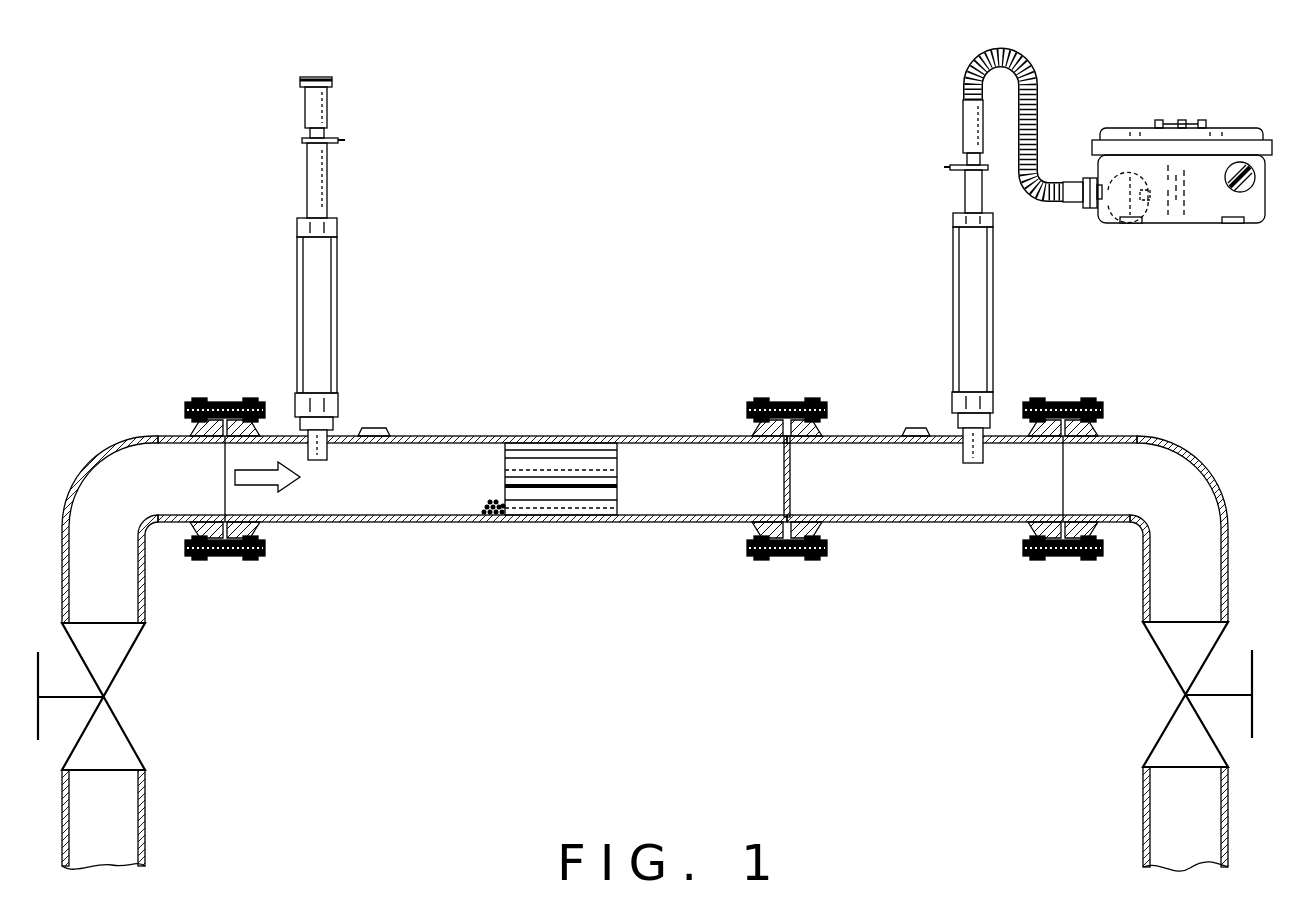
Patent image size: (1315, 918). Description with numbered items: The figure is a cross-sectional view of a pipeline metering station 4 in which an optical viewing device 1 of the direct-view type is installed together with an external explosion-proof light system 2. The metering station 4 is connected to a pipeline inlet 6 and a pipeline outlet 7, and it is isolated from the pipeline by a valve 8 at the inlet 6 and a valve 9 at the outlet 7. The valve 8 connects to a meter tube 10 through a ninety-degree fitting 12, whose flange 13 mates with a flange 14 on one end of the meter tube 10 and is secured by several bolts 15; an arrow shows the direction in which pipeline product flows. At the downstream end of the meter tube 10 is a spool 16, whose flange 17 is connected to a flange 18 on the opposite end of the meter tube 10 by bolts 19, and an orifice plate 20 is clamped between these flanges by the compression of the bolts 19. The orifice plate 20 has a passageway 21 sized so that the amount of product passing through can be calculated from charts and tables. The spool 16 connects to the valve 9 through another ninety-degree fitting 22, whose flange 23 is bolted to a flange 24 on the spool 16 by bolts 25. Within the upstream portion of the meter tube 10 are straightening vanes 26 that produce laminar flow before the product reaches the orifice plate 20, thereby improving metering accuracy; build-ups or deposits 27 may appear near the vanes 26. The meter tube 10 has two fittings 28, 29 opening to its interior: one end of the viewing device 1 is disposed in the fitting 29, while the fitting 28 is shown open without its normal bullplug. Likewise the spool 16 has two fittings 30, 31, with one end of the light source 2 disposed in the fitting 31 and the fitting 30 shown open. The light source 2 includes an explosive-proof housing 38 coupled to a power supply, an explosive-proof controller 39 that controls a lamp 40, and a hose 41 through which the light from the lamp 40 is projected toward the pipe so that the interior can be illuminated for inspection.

The optical viewing device 1 is at (233, 148).
The explosion-proof light system 2 is at (865, 165).
The metering station 4 is at (935, 610).
The pipeline inlet 6 is at (147, 845).
The pipeline outlet 7 is at (1143, 817).
The valve 8 is at (115, 742).
The valve 9 is at (1182, 747).
The meter tube 10 is at (390, 522).
The 90 degree fitting 12 is at (107, 462).
The flange 13 is at (213, 562).
The flange 14 is at (238, 562).
The bolts 15 is at (185, 405).
The spool 16 is at (950, 520).
The flange 17 is at (803, 562).
The flange 18 is at (768, 562).
The bolts 19 is at (787, 400).
The orifice plate 20 is at (785, 448).
The passageway 21 is at (793, 475).
The 90 degree fitting 22 is at (1187, 455).
The flange 23 is at (1080, 560).
The flange 24 is at (1045, 398).
The bolts 25 is at (1100, 400).
The straightening vanes 26 is at (530, 492).
The deposits 27 is at (500, 520).
The fitting 28 is at (370, 428).
The fitting 29 is at (337, 430).
The fitting 30 is at (912, 430).
The fitting 31 is at (950, 428).
The explosive-proof housing 38 is at (1240, 133).
The explosive-proof controller 39 is at (1248, 183).
The lamp 40 is at (1120, 197).
The hose 41 is at (1018, 52).